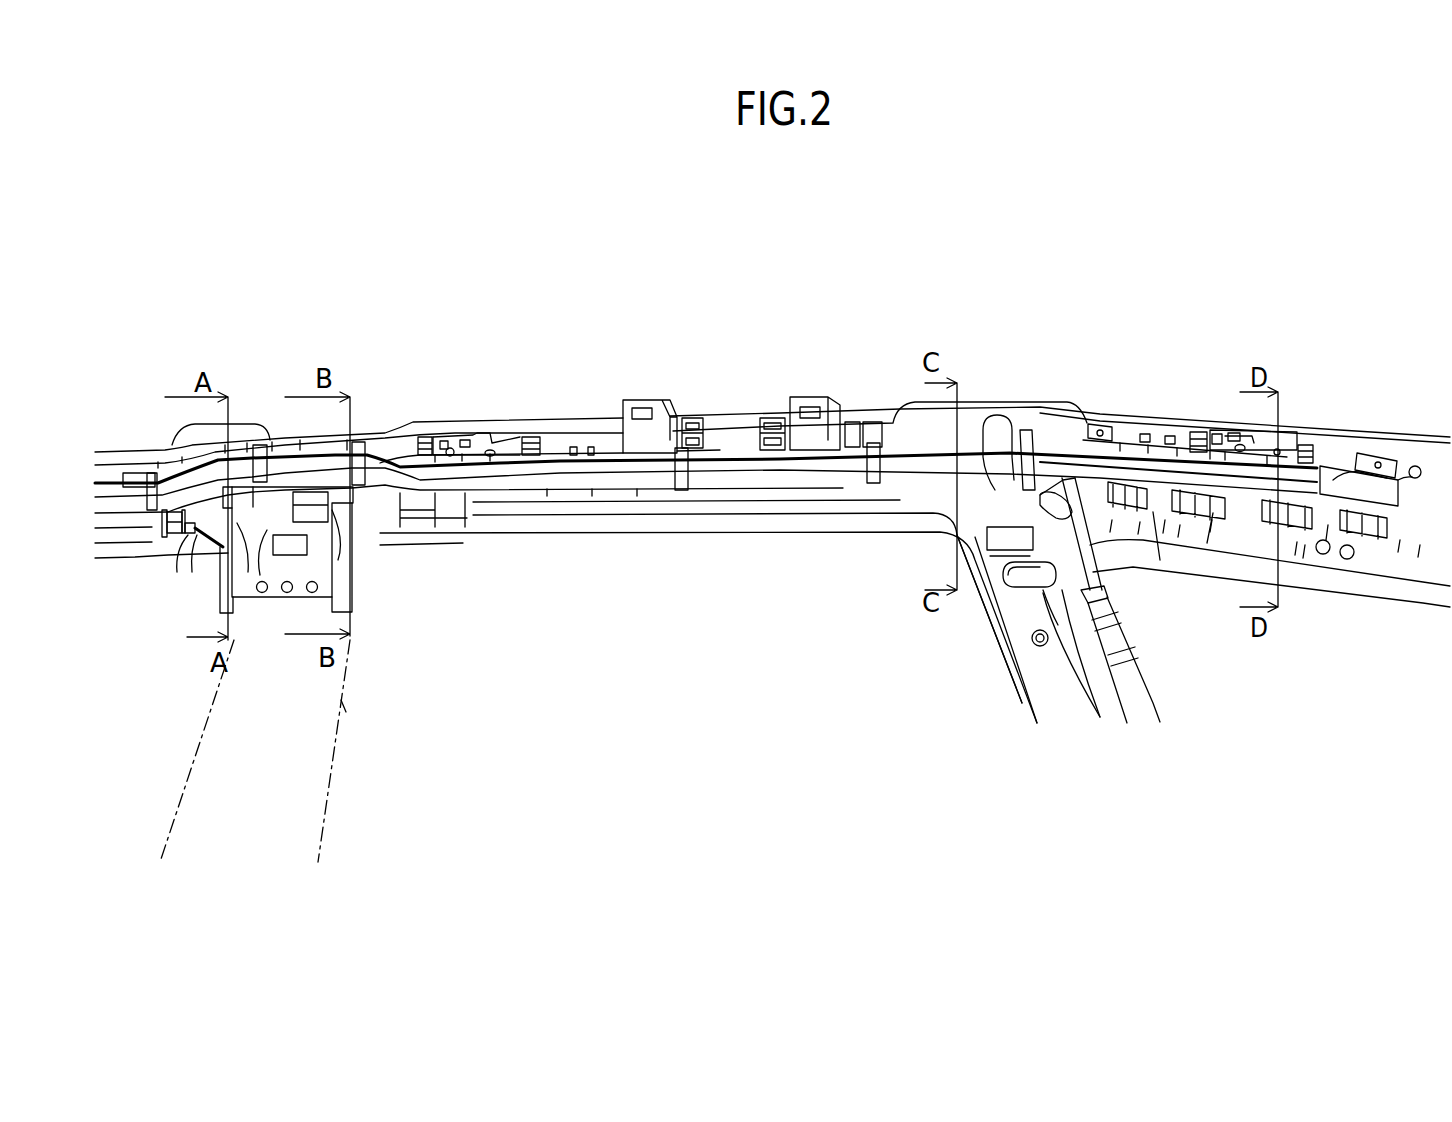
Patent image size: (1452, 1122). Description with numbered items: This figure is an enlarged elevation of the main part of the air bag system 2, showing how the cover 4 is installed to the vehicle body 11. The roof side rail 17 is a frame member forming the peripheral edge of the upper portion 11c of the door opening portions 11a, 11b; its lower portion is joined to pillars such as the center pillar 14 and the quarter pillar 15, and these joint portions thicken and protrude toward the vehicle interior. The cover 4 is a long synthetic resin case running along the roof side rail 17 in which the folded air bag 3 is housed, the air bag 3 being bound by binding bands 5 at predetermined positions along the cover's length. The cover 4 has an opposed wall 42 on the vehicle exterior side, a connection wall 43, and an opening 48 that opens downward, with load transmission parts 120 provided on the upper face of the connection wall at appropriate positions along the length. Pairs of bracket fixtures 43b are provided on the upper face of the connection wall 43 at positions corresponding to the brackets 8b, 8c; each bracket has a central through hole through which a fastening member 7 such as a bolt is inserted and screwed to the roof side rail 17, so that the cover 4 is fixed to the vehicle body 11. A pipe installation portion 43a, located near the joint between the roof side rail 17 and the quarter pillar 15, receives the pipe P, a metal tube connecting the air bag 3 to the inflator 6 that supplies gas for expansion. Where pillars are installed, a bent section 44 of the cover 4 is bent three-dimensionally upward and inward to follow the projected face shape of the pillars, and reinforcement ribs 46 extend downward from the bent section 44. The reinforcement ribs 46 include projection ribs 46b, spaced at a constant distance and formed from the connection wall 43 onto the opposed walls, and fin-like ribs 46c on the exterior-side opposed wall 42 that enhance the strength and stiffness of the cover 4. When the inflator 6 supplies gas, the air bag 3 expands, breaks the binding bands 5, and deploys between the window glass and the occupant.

The air bag system 2 is at (814, 358).
The air bag 3 is at (568, 497).
The cover 4 is at (383, 442).
The binding bands 5 is at (140, 495).
The inflator 6 is at (1143, 700).
The fastening member 7 is at (468, 438).
The bracket 8b is at (452, 438).
The bracket 8c is at (1218, 432).
The vehicle body 11 is at (122, 450).
The door opening portion 11a is at (175, 782).
The door opening portion 11b is at (342, 785).
The upper portion 11c is at (265, 590).
The center pillar 14 is at (345, 712).
The quarter pillar 15 is at (988, 665).
The roof side rail 17 is at (163, 450).
The opposed wall 42 is at (558, 440).
The connection wall 43 is at (545, 440).
The pipe installation portion 43a is at (1026, 498).
The bracket fixture 43b is at (527, 440).
The bent section 44 is at (266, 424).
The reinforcement ribs 46 is at (453, 527).
The projection ribs 46b is at (222, 535).
The fin-like ribs 46c is at (1207, 543).
The opening 48 is at (1356, 450).
The load transmission parts 120 is at (857, 420).
The pipe P is at (1100, 424).